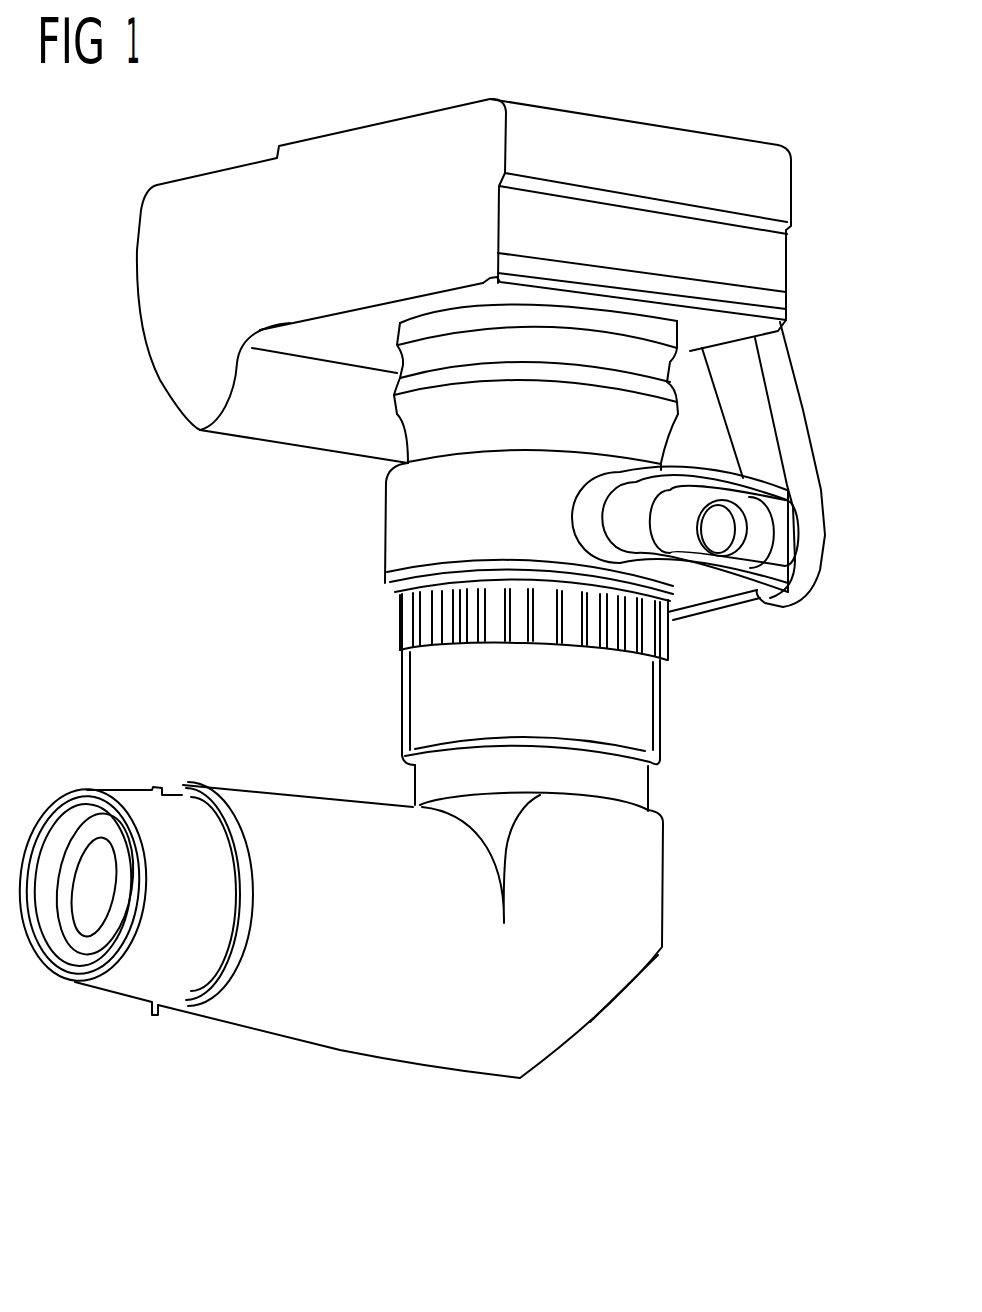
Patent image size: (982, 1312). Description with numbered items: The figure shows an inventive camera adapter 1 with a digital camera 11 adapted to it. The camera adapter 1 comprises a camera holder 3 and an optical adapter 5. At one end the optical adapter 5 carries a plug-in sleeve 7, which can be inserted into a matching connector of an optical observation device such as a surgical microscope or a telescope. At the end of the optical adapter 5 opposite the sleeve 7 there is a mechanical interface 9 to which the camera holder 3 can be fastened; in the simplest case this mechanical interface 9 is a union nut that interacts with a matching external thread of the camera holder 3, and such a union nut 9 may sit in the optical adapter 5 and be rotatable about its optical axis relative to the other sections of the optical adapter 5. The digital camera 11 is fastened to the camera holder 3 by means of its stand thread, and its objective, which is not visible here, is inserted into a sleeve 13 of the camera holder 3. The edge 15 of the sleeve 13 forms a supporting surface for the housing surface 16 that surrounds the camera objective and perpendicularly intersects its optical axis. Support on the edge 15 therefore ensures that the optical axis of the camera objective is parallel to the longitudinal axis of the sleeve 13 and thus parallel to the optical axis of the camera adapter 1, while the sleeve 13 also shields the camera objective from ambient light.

The camera adapter 1 is at (703, 942).
The camera holder 3 is at (358, 528).
The optical adapter 5 is at (452, 1092).
The plug-in sleeve 7 is at (115, 975).
The mechanical interface 9 is at (683, 648).
The digital camera 11 is at (773, 180).
The sleeve 13 is at (412, 428).
The edge 15 is at (643, 333).
The housing surface 16 is at (457, 298).